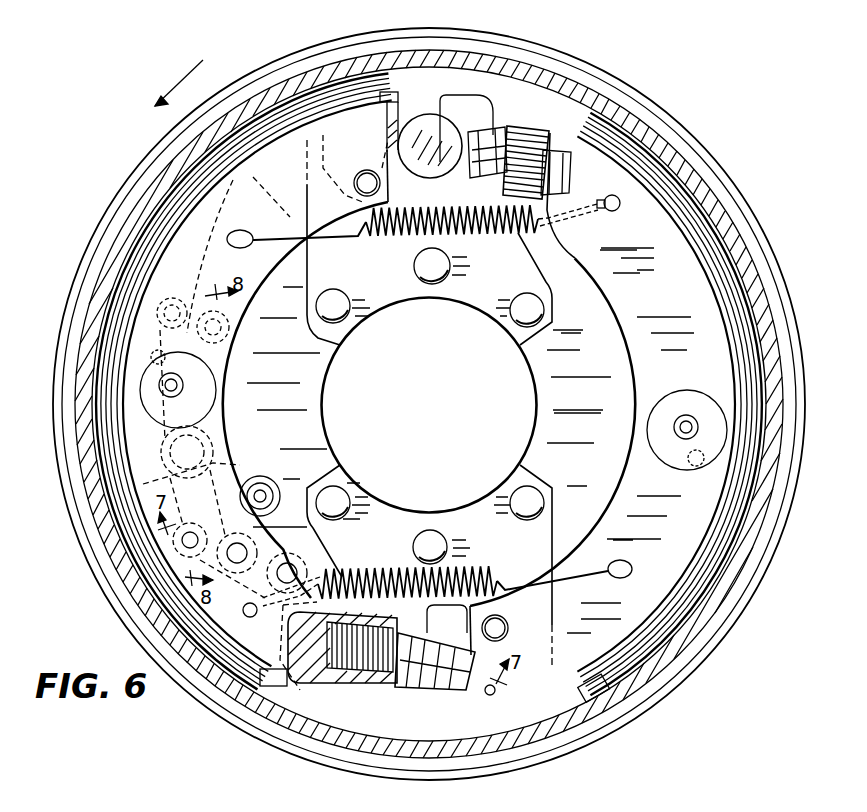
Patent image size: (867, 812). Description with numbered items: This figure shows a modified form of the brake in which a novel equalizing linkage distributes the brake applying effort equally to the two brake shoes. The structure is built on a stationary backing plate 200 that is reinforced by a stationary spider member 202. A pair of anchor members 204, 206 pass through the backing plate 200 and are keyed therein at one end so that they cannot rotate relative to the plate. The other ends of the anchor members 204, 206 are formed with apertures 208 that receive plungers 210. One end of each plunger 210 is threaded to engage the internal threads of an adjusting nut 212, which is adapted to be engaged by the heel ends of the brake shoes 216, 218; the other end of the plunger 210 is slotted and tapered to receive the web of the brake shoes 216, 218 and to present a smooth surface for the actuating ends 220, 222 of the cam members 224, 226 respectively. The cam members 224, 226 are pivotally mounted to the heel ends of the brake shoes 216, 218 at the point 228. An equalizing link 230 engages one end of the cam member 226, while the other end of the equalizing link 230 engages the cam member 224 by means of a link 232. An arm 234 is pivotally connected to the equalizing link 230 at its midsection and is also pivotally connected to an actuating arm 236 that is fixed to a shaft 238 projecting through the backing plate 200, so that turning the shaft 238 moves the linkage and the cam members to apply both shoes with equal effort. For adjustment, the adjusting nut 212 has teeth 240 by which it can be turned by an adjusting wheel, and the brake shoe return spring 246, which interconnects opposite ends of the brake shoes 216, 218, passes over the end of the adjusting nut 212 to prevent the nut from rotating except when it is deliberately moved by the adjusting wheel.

The backing plate 200 is at (700, 158).
The spider member 202 is at (518, 269).
The anchor member 204 is at (447, 126).
The anchor member 206 is at (416, 698).
The aperture 208 is at (435, 693).
The plunger 210 is at (398, 117).
The adjusting nut 212 is at (509, 133).
The brake shoe 216 is at (170, 270).
The brake shoe 218 is at (677, 257).
The actuating end 220 is at (378, 122).
The actuating end 222 is at (490, 695).
The cam member 224 is at (283, 117).
The cam member 226 is at (363, 573).
The pivot point 228 is at (372, 185).
The equalizing link 230 is at (140, 616).
The link 232 is at (248, 407).
The arm 234 is at (302, 481).
The actuating arm 236 is at (247, 473).
The shaft 238 is at (143, 484).
The teeth 240 is at (554, 130).
The brake shoe return spring 246 is at (405, 242).